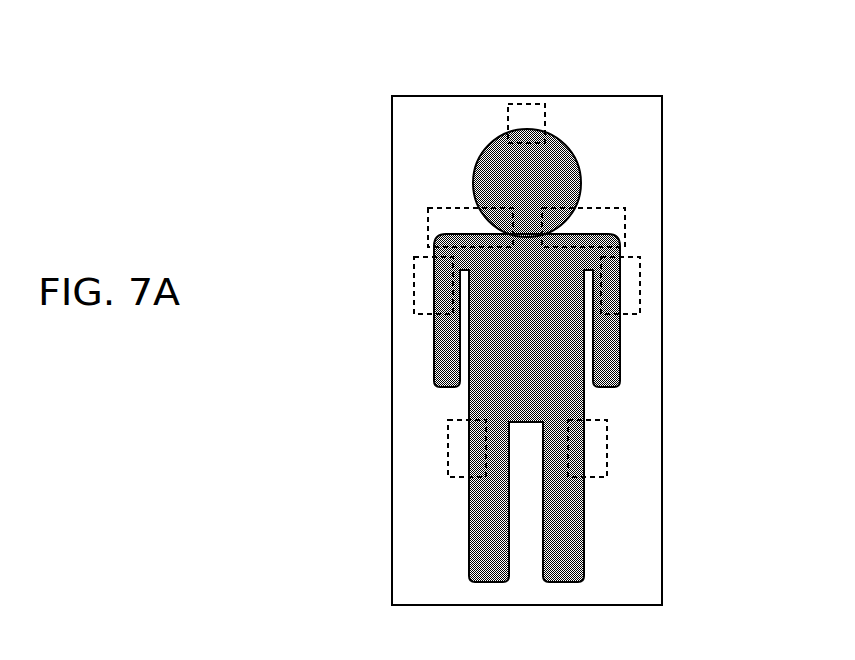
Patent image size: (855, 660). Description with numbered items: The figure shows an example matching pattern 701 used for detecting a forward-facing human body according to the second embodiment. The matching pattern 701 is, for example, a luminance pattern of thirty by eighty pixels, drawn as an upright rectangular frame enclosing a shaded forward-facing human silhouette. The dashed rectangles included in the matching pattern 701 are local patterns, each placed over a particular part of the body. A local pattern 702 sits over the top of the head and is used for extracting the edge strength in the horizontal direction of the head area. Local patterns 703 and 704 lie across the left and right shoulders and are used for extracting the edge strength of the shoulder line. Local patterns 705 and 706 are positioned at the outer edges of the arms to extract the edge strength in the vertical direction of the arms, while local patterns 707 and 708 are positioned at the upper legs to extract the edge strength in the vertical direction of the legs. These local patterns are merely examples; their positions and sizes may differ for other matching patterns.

The matching pattern 701 is at (408, 95).
The local pattern 702 is at (534, 104).
The local pattern 703 is at (459, 207).
The local pattern 704 is at (610, 207).
The local pattern 705 is at (425, 257).
The local pattern 706 is at (632, 257).
The local pattern 707 is at (455, 418).
The local pattern 708 is at (598, 418).